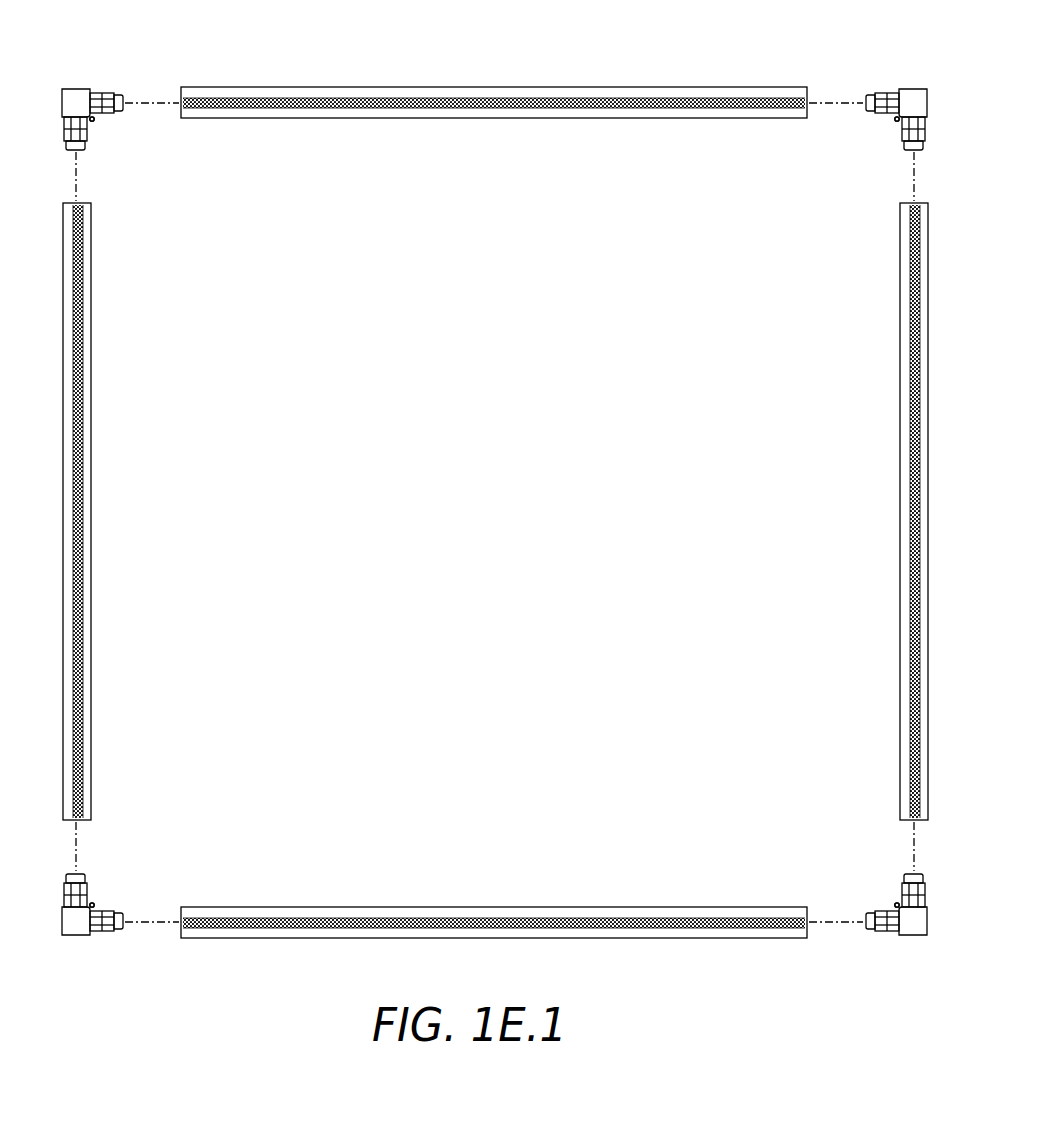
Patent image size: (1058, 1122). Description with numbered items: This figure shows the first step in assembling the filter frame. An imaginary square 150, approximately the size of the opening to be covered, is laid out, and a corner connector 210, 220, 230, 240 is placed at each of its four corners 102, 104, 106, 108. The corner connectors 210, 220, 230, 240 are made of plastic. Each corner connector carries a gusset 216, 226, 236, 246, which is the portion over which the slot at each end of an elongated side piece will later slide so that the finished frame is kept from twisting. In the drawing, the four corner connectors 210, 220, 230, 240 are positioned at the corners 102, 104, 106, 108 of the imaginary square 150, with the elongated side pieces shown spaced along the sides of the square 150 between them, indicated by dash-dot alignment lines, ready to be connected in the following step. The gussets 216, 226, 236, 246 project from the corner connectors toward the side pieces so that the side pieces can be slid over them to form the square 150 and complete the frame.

The corner 102 is at (118, 850).
The corner 104 is at (118, 176).
The corner 106 is at (873, 174).
The corner 108 is at (873, 850).
The imaginary square 150 is at (462, 495).
The corner connector 210 is at (75, 935).
The gusset 216 is at (94, 904).
The corner connector 220 is at (73, 89).
The gusset 226 is at (94, 120).
The corner connector 230 is at (905, 89).
The gusset 236 is at (895, 120).
The corner connector 240 is at (912, 935).
The gusset 246 is at (895, 904).